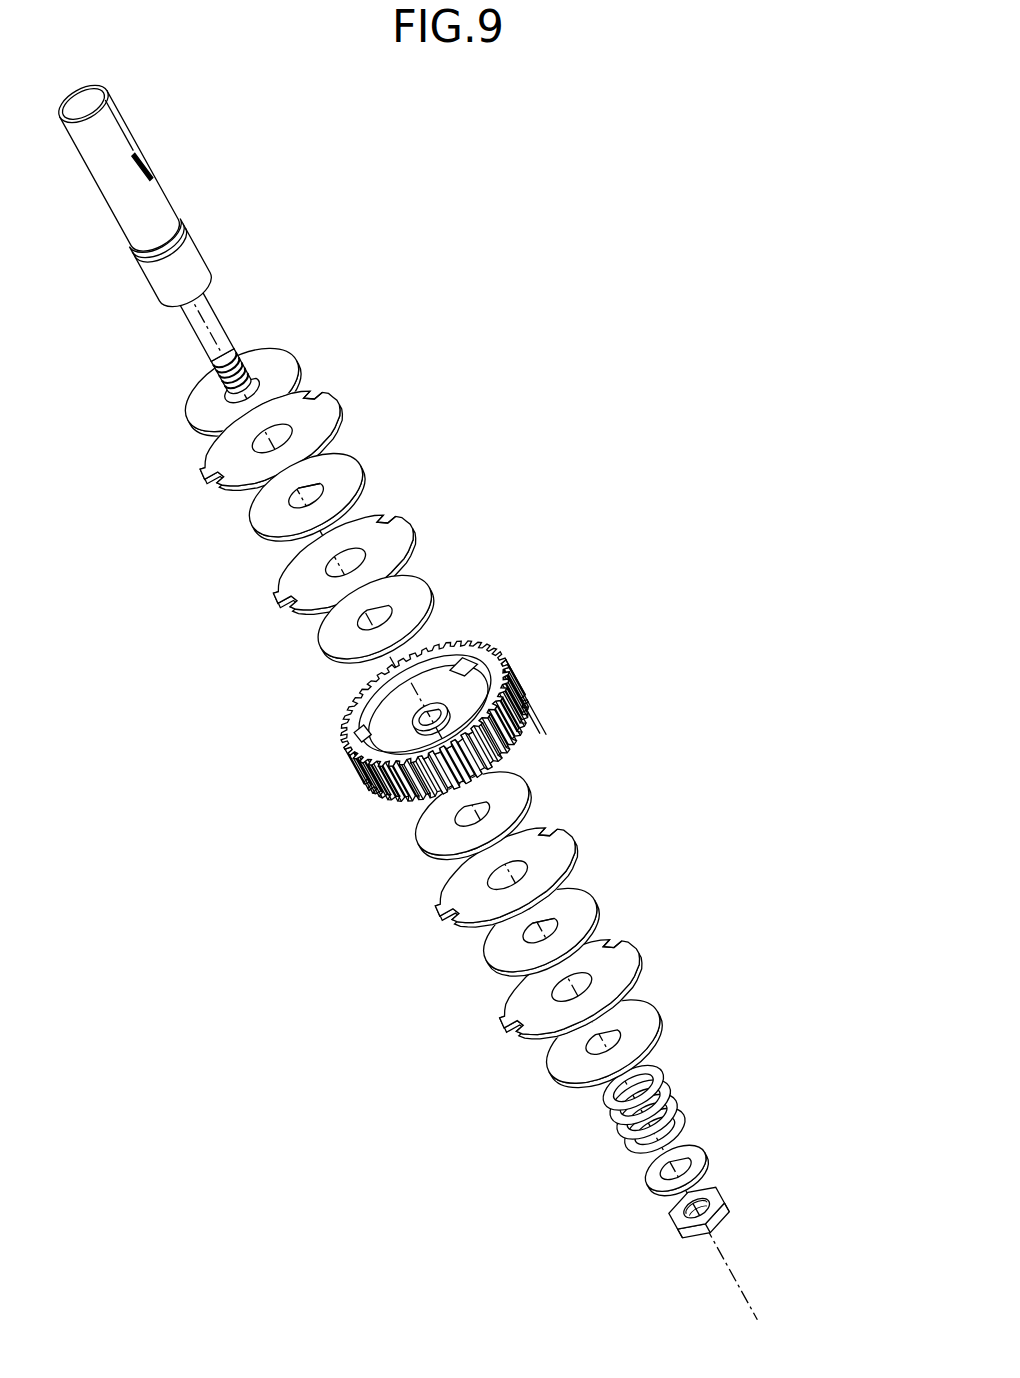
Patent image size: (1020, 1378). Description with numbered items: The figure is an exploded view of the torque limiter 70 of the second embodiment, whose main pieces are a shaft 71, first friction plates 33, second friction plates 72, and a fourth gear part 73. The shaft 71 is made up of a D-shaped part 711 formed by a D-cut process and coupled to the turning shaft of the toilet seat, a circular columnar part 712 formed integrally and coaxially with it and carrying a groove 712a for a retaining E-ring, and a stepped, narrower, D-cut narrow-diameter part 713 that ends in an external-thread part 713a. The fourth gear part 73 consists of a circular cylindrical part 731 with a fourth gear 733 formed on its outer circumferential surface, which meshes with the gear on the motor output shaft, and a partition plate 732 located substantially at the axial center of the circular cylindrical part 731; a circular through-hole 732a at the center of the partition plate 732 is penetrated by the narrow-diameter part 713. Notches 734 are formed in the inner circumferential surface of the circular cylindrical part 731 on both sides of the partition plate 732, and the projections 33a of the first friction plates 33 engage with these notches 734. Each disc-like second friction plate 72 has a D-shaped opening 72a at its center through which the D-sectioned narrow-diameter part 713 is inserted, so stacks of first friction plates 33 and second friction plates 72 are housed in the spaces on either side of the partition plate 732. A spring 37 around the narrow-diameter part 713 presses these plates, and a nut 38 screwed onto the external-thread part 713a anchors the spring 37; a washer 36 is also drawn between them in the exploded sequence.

The torque limiter 70 is at (448, 699).
The shaft 71 is at (160, 243).
The D-shaped part 711 is at (100, 135).
The circular columnar part 712 is at (183, 257).
The groove 712a is at (147, 240).
The narrow-diameter part 713 is at (203, 315).
The external-thread part 713a is at (212, 372).
The second friction plates 72 is at (448, 714).
The D-shaped opening 72a is at (517, 957).
The first friction plates 33 is at (435, 729).
The projections 33a is at (613, 1000).
The fourth gear part 73 is at (443, 717).
The circular cylindrical part 731 is at (350, 707).
The partition plate 732 is at (500, 667).
The circular through-hole 732a is at (527, 727).
The fourth gear 733 is at (387, 805).
The notches 734 is at (353, 743).
The spring 37 is at (663, 1083).
The washer 36 is at (697, 1153).
The nut 38 is at (727, 1205).